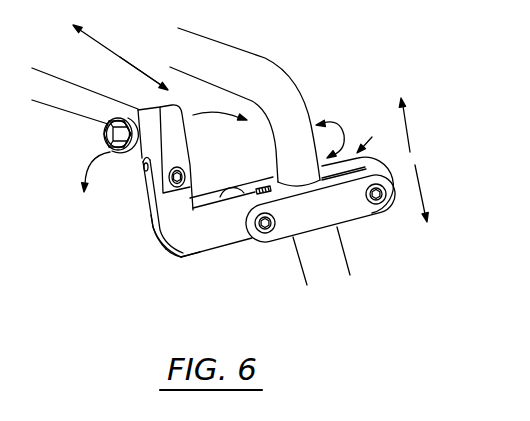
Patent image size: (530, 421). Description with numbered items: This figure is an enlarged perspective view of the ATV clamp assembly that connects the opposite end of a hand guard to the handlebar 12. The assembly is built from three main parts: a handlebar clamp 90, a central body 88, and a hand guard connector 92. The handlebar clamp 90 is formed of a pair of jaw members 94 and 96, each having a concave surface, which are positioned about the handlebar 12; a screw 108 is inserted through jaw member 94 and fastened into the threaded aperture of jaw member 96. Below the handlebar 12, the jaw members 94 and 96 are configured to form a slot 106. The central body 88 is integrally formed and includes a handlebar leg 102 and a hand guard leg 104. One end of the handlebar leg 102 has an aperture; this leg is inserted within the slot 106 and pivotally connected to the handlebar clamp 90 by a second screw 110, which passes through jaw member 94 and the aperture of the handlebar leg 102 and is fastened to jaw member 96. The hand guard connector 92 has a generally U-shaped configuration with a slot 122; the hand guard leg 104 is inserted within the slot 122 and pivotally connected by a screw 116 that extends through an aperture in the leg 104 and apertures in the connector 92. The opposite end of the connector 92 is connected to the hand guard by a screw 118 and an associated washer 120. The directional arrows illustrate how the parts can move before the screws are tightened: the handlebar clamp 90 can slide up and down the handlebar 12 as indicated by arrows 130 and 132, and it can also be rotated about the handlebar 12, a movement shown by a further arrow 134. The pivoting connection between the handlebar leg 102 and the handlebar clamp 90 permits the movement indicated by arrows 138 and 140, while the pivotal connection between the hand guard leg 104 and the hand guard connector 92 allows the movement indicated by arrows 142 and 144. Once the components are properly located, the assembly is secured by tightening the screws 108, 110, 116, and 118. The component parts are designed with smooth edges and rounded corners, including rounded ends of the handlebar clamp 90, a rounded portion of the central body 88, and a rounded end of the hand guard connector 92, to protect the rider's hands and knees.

The handlebar 12 is at (283, 62).
The central body 88 is at (181, 257).
The handlebar clamp 90 is at (377, 139).
The hand guard connector 92 is at (178, 135).
The jaw member 94 is at (347, 222).
The jaw member 96 is at (242, 190).
The handlebar leg 102 is at (207, 251).
The hand guard leg 104 is at (156, 237).
The slot 106 is at (260, 190).
The screw 108 is at (376, 207).
The screw 110 is at (267, 234).
The screw 116 is at (157, 210).
The screw 118 is at (113, 143).
The washer 120 is at (110, 128).
The slot 122 is at (147, 192).
The directional arrow 130 is at (410, 122).
The directional arrow 132 is at (421, 188).
The rotation arrow 134 is at (337, 122).
The directional arrow 138 is at (97, 42).
The directional arrow 140 is at (137, 68).
The directional arrow 142 is at (84, 176).
The directional arrow 144 is at (213, 112).